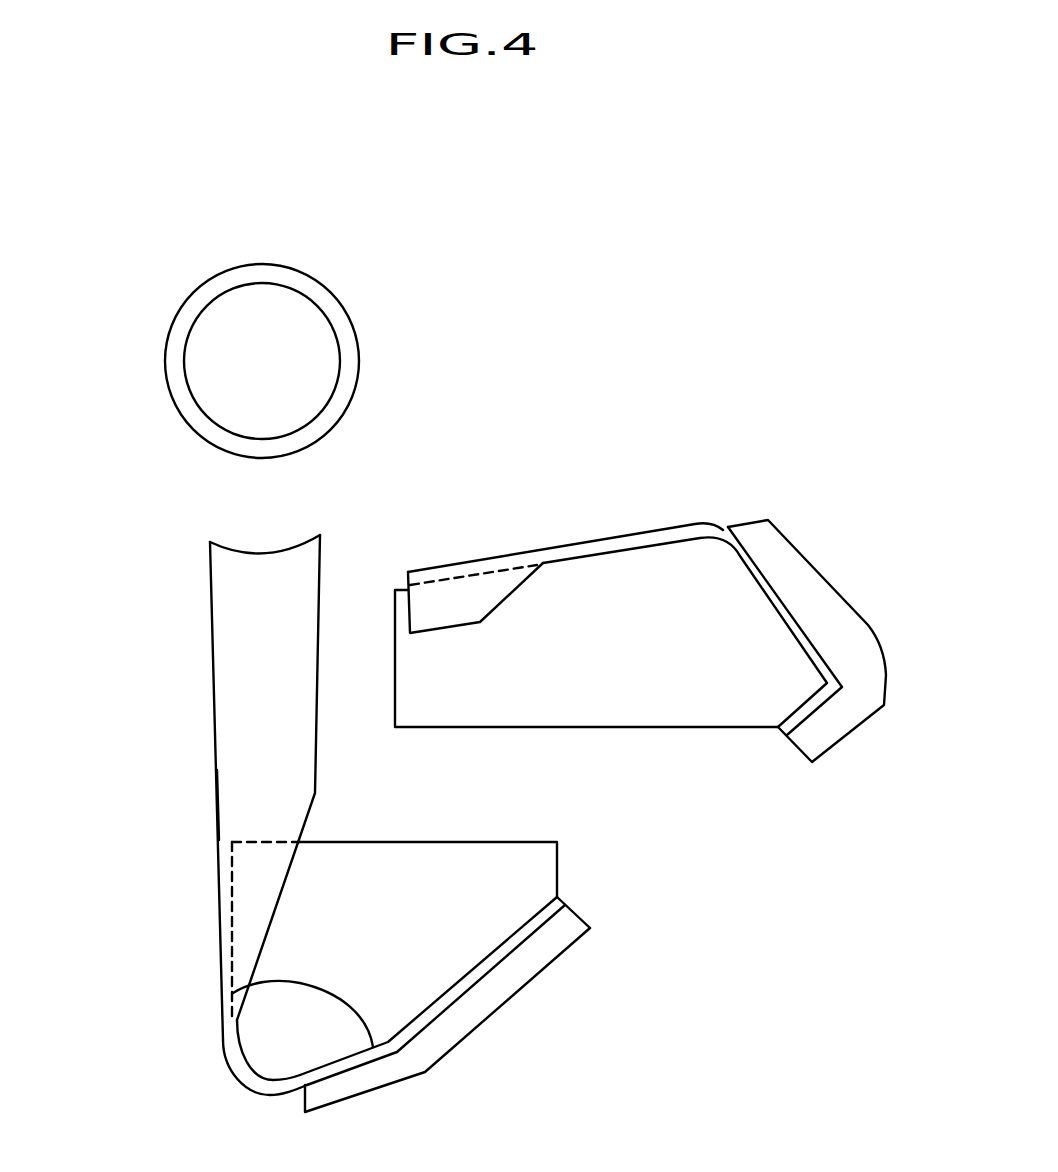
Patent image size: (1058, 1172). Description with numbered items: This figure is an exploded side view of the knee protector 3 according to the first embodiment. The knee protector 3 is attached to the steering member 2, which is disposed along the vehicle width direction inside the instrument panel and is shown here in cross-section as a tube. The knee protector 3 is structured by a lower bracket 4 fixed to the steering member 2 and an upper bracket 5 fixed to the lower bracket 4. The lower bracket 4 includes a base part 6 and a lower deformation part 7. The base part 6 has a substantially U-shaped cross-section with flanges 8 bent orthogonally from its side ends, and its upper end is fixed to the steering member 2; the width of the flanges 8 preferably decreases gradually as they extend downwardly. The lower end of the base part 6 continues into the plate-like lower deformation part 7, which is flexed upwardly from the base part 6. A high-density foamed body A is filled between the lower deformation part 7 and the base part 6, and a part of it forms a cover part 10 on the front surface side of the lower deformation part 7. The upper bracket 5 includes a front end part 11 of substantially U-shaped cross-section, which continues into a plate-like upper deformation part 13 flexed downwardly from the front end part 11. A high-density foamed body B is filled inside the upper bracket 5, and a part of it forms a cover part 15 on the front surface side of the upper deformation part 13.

The steering member 2 is at (327, 282).
The knee protector 3 is at (727, 855).
The lower bracket 4 is at (115, 780).
The upper bracket 5 is at (727, 443).
The base part 6 is at (217, 770).
The lower deformation part 7 is at (233, 993).
The flange 8 is at (305, 577).
The cover part 10 is at (502, 1003).
The front end part 11 is at (473, 600).
The upper deformation part 13 is at (662, 528).
The cover part 15 is at (845, 597).